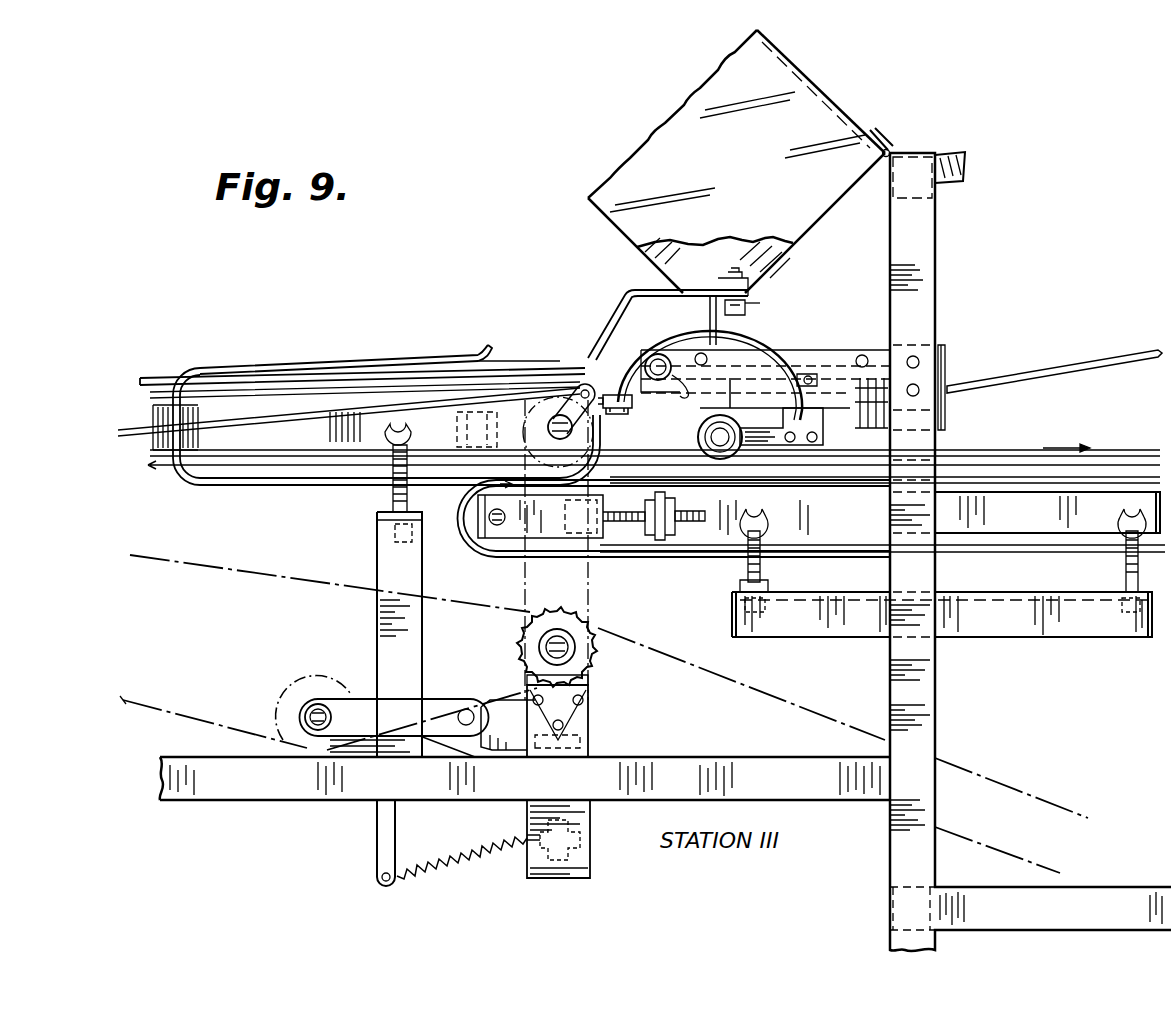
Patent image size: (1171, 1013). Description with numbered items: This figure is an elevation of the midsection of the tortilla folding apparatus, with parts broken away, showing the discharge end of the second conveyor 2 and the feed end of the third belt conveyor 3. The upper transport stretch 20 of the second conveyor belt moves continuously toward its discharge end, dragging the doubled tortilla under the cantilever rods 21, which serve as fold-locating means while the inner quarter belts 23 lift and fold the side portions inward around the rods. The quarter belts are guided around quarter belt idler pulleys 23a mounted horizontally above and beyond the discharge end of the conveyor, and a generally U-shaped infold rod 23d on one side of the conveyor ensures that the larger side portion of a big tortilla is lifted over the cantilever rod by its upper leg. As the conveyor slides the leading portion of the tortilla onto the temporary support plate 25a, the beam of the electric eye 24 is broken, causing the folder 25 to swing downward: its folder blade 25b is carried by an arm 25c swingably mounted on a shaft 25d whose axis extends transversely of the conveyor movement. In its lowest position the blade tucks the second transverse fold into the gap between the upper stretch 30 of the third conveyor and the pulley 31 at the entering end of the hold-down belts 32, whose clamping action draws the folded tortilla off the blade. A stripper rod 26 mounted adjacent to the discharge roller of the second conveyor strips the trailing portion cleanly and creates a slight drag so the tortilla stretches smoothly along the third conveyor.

The second conveyor 2 is at (165, 488).
The third belt conveyor 3 is at (692, 582).
The upper transport stretch of second conveyor belt 20 is at (483, 390).
The cantilever rods 21 is at (178, 380).
The quarter belts 23 is at (542, 370).
The quarter belt idler pulleys 23a is at (777, 323).
The infold rod 23d is at (395, 362).
The electric eye 24 is at (770, 332).
The folder 25 is at (635, 340).
The temporary support plate 25a is at (612, 412).
The folder blade 25b is at (612, 320).
The arm 25c is at (706, 308).
The shaft 25d is at (690, 380).
The stripper rod 26 is at (590, 392).
The upper stretch of third conveyor belt 30 is at (692, 474).
The pulley 31 is at (705, 452).
The hold-down belts 32 is at (975, 458).